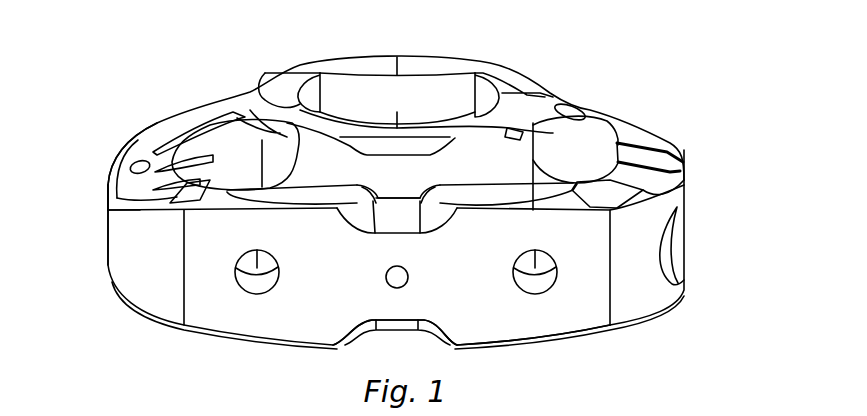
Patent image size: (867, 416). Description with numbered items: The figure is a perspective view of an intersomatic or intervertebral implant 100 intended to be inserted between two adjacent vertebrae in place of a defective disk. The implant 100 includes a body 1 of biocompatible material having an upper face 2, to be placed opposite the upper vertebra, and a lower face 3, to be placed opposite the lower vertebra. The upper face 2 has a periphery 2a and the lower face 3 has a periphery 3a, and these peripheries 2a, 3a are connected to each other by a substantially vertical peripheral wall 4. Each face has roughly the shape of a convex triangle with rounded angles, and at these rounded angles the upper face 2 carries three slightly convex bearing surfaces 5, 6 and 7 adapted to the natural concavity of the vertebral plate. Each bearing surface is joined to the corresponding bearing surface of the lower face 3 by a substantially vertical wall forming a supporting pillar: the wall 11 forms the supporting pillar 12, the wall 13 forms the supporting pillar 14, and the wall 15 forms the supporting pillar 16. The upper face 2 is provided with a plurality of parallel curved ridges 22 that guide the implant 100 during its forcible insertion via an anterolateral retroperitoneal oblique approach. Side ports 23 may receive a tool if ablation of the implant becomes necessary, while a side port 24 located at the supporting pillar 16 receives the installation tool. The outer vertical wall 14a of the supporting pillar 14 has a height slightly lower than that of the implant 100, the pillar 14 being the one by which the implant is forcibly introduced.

The intervertebral implant 100 is at (708, 56).
The body 1 is at (583, 70).
The upper face 2 is at (272, 78).
The periphery of the upper face 2a is at (100, 148).
The lower face 3 is at (375, 348).
The periphery of the lower face 3a is at (638, 343).
The peripheral wall 4 is at (148, 290).
The bearing surface 5 is at (427, 67).
The bearing surface 6 is at (143, 145).
The bearing surface 7 is at (687, 170).
The vertical wall 11 is at (363, 93).
The supporting pillar 12 is at (496, 55).
The vertical wall 13 is at (222, 145).
The supporting pillar 14 is at (140, 247).
The outer vertical wall of the supporting pillar 14a is at (103, 211).
The vertical wall 15 is at (590, 155).
The supporting pillar 16 is at (657, 313).
The ridges 22 is at (173, 118).
The side ports 23 is at (247, 280).
The side port 24 is at (670, 247).